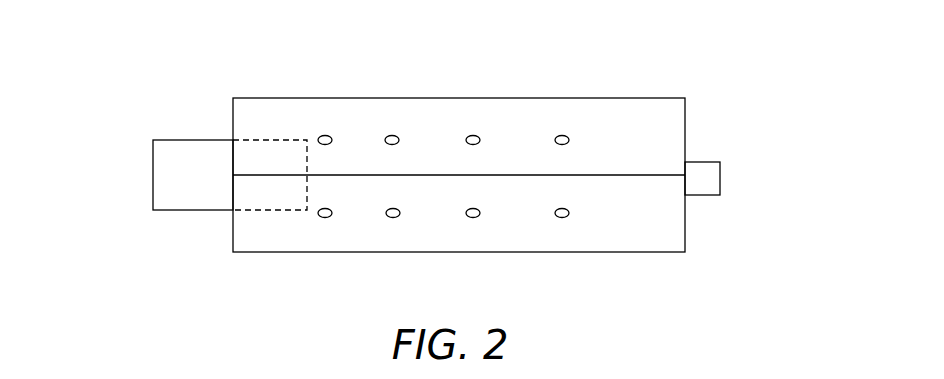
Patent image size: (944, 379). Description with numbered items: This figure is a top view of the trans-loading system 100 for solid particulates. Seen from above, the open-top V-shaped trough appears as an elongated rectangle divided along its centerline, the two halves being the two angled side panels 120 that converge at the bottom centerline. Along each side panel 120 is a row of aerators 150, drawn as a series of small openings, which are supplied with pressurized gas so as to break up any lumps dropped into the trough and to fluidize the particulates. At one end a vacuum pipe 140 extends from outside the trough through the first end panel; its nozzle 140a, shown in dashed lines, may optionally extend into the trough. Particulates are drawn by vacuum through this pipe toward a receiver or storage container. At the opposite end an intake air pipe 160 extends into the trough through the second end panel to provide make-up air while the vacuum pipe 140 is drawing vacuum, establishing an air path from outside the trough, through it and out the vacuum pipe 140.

The trans-loading system 100 is at (650, 62).
The angled side panel 120 is at (433, 126).
The vacuum pipe 140 is at (188, 193).
The nozzle 140a is at (277, 190).
The aerator 150 is at (385, 135).
The intake air pipe 160 is at (700, 162).